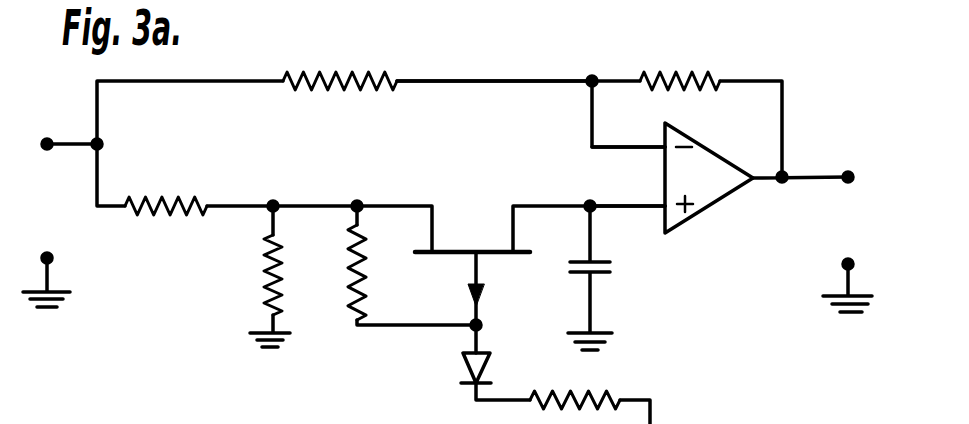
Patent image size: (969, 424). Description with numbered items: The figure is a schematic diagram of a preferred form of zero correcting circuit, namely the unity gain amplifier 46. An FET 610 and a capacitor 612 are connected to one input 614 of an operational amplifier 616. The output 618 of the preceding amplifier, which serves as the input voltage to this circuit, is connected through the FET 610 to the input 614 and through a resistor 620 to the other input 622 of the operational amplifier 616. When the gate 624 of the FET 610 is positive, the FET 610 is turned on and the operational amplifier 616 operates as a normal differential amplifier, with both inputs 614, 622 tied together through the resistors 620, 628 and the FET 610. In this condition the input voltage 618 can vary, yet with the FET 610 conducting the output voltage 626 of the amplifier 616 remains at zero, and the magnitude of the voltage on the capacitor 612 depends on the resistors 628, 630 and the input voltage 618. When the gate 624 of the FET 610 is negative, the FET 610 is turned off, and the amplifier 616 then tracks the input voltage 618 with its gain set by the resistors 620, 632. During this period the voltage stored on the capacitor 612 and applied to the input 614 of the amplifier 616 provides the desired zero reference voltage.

The unity gain amplifier 46 is at (448, 76).
The FET 610 is at (497, 198).
The capacitor 612 is at (607, 268).
The input 614 is at (661, 210).
The operational amplifier 616 is at (760, 143).
The output 618 is at (55, 205).
The resistor 620 is at (342, 96).
The input 622 is at (662, 142).
The gate 624 is at (474, 290).
The output voltage 626 is at (832, 222).
The resistor 628 is at (163, 196).
The resistor 630 is at (263, 278).
The resistor 632 is at (665, 78).